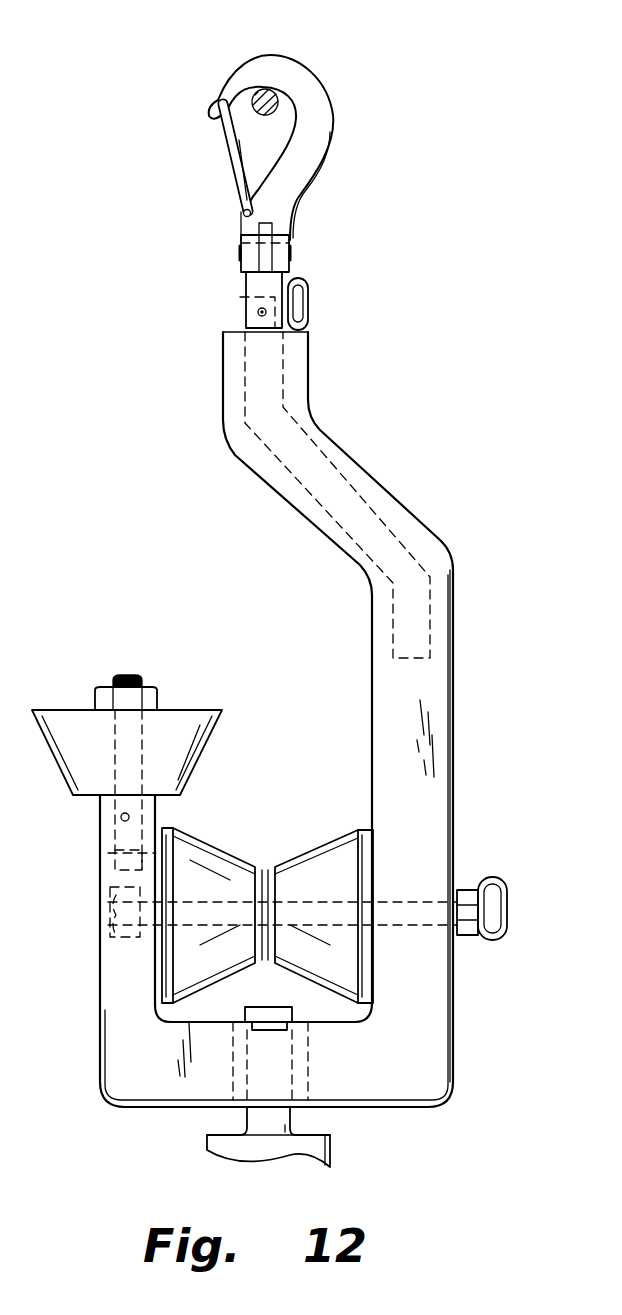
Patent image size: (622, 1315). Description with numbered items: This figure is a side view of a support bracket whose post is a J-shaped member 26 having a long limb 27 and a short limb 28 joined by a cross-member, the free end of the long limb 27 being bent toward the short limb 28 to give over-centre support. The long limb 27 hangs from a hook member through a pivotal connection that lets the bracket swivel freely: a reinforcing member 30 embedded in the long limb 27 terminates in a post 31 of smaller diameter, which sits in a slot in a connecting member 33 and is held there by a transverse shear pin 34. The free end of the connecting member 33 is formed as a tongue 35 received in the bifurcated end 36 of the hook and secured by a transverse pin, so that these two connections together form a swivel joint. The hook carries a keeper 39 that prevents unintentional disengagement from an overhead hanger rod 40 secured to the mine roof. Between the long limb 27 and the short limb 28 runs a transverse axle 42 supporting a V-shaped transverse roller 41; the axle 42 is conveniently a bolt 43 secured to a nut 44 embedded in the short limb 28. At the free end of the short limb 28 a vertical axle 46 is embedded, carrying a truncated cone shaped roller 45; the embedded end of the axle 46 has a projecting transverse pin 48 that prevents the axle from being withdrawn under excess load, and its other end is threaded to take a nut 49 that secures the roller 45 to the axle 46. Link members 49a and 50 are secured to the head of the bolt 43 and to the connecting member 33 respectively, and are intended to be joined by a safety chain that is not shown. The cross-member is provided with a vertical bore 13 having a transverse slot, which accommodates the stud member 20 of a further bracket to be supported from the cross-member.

The vertical bore 13 is at (310, 1050).
The stud member 20 is at (260, 1118).
The J shaped member 26 is at (300, 566).
The long limb 27 is at (455, 738).
The short limb 28 is at (100, 1010).
The reinforcing member 30 is at (270, 408).
The post 31 is at (240, 300).
The connecting member 33 is at (246, 282).
The transverse shear pin 34 is at (258, 313).
The tongue 35 is at (270, 237).
The bifurcated end 36 is at (243, 236).
The keeper 39 is at (230, 160).
The overhead hanger rod 40 is at (277, 90).
The V shaped transverse roller 41 is at (330, 857).
The transverse axle 42 is at (233, 907).
The bolt 43 is at (467, 890).
The nut 44 is at (130, 940).
The truncated cone shaped roller 45 is at (207, 713).
The vertical axle 46 is at (100, 840).
The projecting transverse pin 48 is at (130, 817).
The nut 49 is at (153, 697).
The link member 49a is at (312, 298).
The link member 50 is at (497, 943).